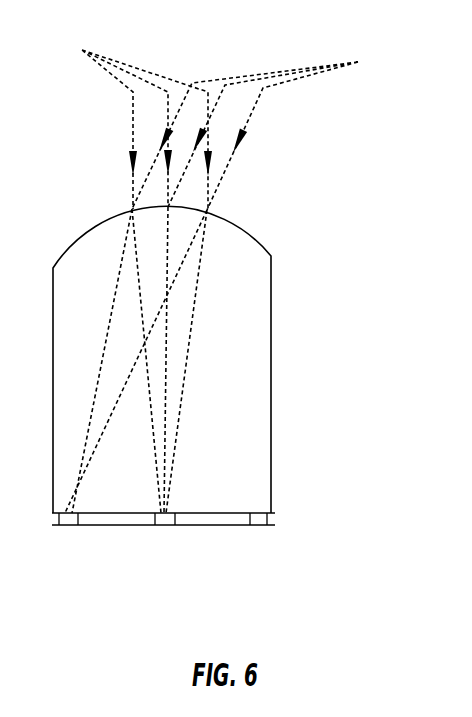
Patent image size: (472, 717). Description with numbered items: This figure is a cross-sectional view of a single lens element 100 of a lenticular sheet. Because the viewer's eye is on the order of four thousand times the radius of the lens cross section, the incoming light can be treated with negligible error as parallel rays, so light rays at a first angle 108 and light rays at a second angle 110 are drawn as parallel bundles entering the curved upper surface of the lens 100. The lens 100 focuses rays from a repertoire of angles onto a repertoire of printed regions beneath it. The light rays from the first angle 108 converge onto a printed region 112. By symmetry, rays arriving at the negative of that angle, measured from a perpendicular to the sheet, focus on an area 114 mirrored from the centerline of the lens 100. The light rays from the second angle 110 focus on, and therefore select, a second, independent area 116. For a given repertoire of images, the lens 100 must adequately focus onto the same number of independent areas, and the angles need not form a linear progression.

The lens element 100 is at (270, 256).
The light rays at a first angle 108 is at (261, 128).
The light rays at a second angle 110 is at (128, 120).
The printed region 112 is at (68, 525).
The mirrored area 114 is at (165, 525).
The second independent area 116 is at (258, 525).